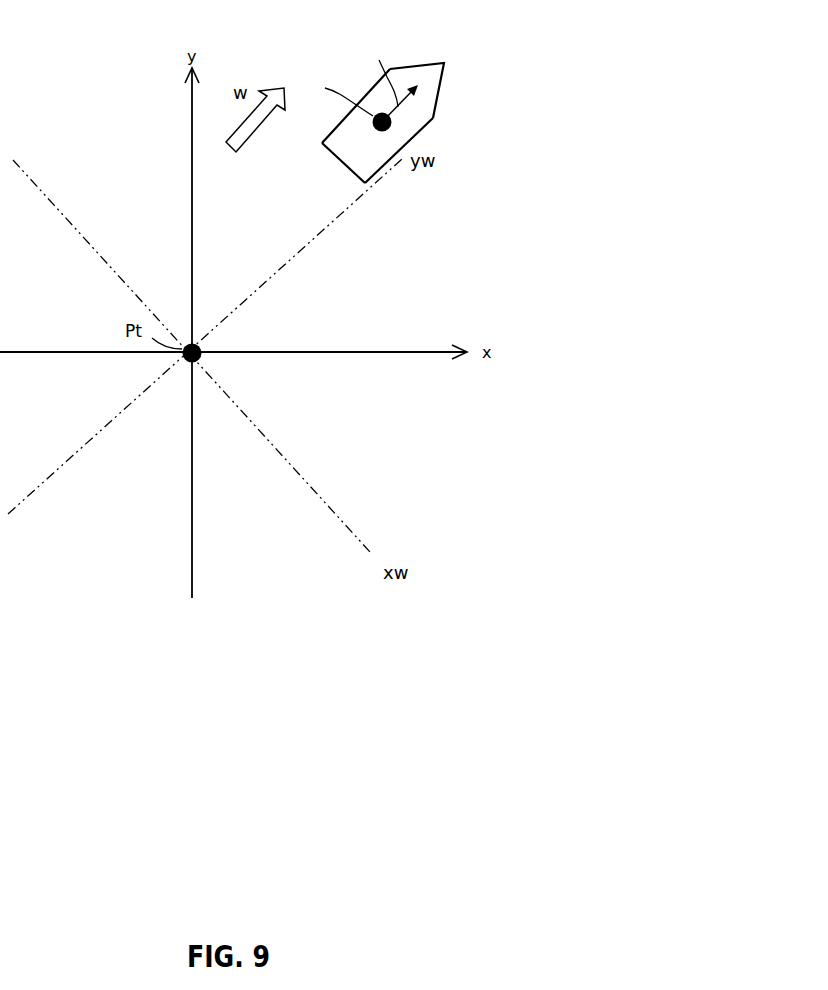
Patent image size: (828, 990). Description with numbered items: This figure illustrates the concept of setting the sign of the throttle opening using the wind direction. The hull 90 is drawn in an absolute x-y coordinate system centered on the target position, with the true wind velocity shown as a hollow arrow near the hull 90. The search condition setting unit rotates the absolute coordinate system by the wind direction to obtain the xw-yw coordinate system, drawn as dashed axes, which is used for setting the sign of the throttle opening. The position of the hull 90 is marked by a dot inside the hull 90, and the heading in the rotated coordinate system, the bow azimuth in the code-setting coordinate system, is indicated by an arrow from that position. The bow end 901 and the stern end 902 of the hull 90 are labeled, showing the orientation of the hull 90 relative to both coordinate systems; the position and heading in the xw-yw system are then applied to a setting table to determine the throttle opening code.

The hull 90 is at (423, 116).
The bow of ship 901 is at (452, 56).
The stern of ship 902 is at (322, 157).